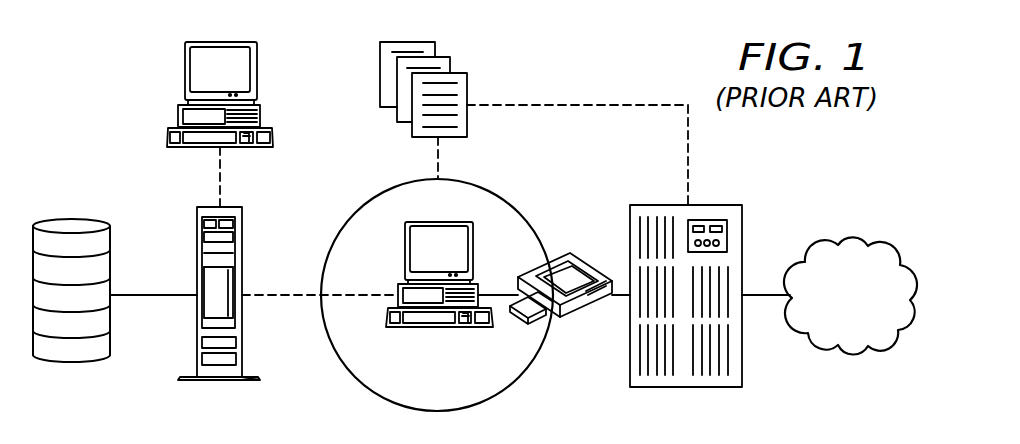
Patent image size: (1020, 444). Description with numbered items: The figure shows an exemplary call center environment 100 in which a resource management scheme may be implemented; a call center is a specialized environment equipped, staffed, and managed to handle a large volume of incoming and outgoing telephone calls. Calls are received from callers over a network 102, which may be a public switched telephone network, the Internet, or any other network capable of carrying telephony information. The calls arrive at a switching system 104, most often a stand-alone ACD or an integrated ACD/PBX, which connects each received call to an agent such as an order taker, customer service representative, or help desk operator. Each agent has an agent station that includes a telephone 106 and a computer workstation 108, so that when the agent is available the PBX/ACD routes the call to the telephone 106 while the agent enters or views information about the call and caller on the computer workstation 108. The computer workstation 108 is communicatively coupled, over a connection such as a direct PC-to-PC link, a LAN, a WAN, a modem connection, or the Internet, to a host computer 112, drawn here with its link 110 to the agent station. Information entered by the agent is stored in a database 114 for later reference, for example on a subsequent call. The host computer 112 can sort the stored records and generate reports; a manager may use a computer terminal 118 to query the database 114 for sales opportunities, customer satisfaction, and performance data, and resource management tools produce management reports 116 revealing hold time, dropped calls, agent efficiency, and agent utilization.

The call center environment 100 is at (104, 103).
The network 102 is at (867, 250).
The switching system 104 is at (743, 227).
The telephone 106 is at (582, 313).
The computer workstation 108 is at (460, 259).
The data link 110 is at (293, 295).
The host computer 112 is at (193, 333).
The database 114 is at (70, 225).
The management reports 116 is at (467, 90).
The computer terminal 118 is at (242, 80).